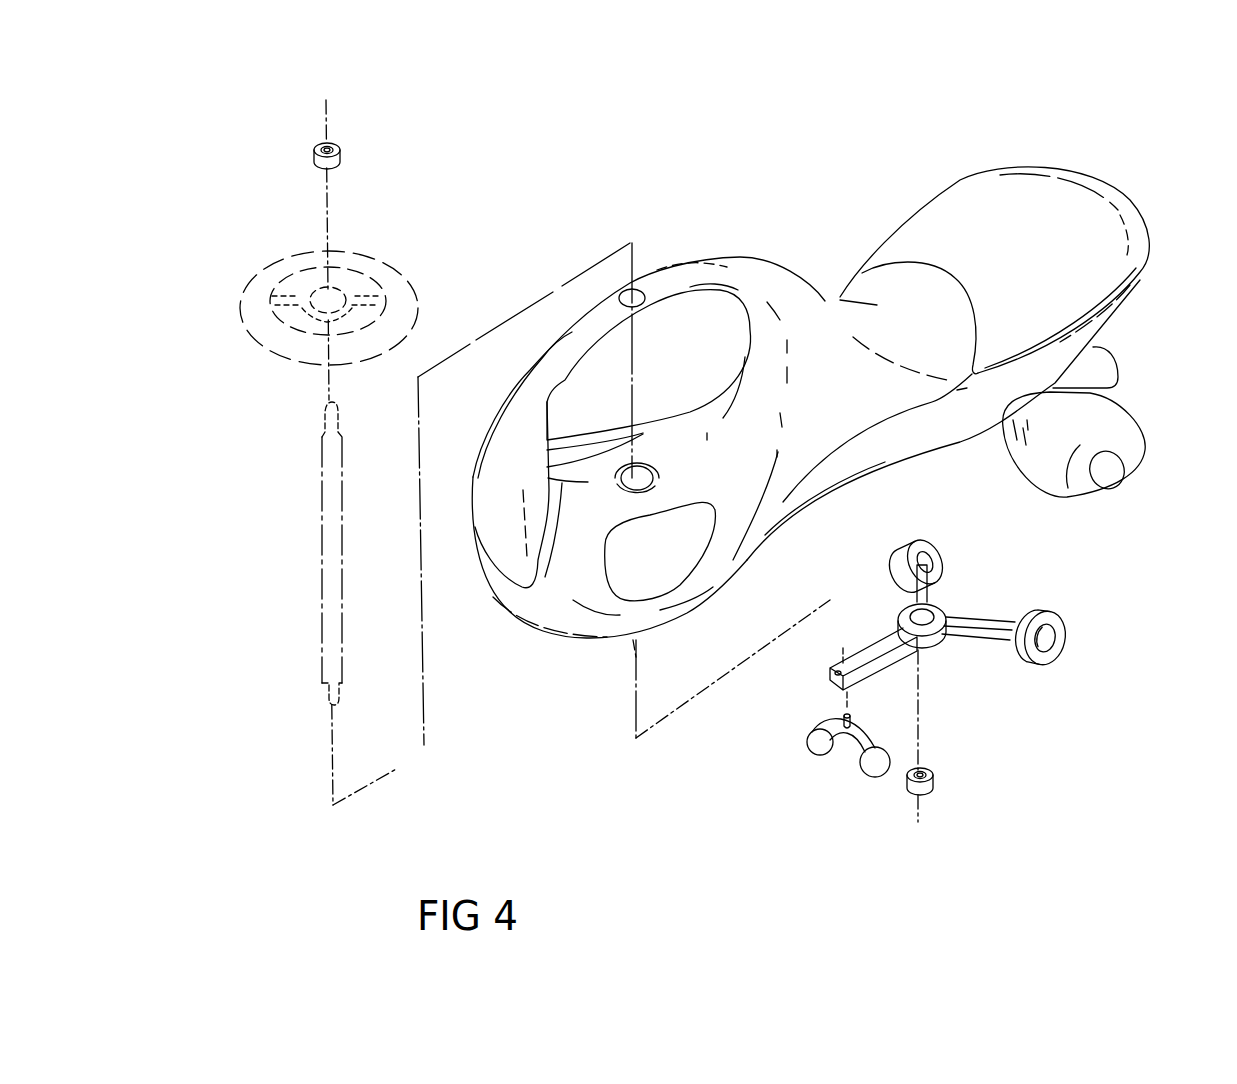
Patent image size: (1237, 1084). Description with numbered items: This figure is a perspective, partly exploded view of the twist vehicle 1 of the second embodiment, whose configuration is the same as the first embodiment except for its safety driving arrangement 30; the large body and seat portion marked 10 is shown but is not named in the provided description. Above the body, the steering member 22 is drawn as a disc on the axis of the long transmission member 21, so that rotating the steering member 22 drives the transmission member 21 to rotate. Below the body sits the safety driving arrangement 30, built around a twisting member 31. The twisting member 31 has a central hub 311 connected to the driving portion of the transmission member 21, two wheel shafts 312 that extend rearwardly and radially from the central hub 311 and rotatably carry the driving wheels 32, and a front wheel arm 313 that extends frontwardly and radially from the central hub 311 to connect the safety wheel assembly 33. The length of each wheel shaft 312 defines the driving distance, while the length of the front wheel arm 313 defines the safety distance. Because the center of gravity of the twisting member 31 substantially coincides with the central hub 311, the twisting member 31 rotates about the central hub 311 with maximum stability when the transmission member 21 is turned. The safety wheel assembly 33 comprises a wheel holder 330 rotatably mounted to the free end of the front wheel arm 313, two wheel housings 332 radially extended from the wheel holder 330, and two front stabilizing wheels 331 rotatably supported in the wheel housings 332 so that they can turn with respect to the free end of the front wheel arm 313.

The twist vehicle 1 is at (1110, 145).
The seat 10 is at (1105, 245).
The transmission member 21 is at (323, 510).
The steering member 22 is at (272, 343).
The safety driving arrangement 30 is at (967, 600).
The twisting member 31 is at (924, 623).
The central hub 311 is at (924, 622).
The wheel shafts 312 is at (920, 582).
The front wheel arm 313 is at (870, 652).
The driving wheels 32 is at (907, 543).
The safety wheel assembly 33 is at (799, 762).
The wheel holder 330 is at (838, 707).
The front stabilizing wheels 331 is at (823, 767).
The wheel housings 332 is at (808, 752).